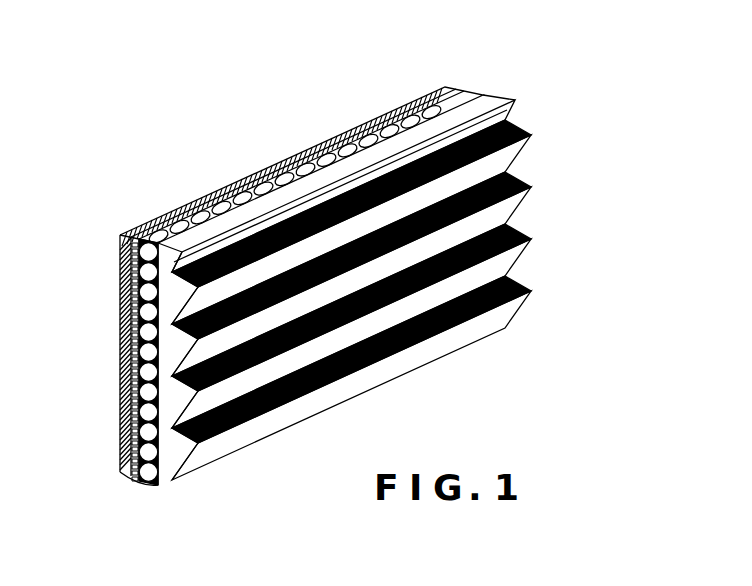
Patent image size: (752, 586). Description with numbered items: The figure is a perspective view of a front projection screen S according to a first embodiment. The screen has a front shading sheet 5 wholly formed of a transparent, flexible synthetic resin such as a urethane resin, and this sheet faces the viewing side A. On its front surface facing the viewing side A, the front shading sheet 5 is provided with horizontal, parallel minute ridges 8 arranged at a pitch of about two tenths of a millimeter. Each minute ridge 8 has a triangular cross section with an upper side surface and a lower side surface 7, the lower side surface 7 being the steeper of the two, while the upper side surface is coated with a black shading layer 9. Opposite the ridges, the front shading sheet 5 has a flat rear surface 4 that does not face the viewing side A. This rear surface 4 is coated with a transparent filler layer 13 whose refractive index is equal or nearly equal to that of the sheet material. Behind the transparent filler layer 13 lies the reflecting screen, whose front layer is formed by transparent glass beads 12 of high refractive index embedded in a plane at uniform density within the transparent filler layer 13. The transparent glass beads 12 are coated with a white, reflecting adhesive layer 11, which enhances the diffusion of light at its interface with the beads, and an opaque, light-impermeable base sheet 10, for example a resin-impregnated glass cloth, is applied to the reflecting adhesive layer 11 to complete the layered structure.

The rear surface 4 is at (158, 346).
The front shading sheet 5 is at (487, 106).
The lower side surface 7 is at (506, 158).
The minute ridges 8 is at (178, 298).
The black shading layer 9 is at (350, 191).
The base sheet 10 is at (120, 411).
The reflecting adhesive layer 11 is at (120, 372).
The transparent glass beads 12 is at (120, 267).
The transparent filler layer 13 is at (256, 180).
The front projection screen S is at (498, 91).
The viewing side A is at (692, 294).